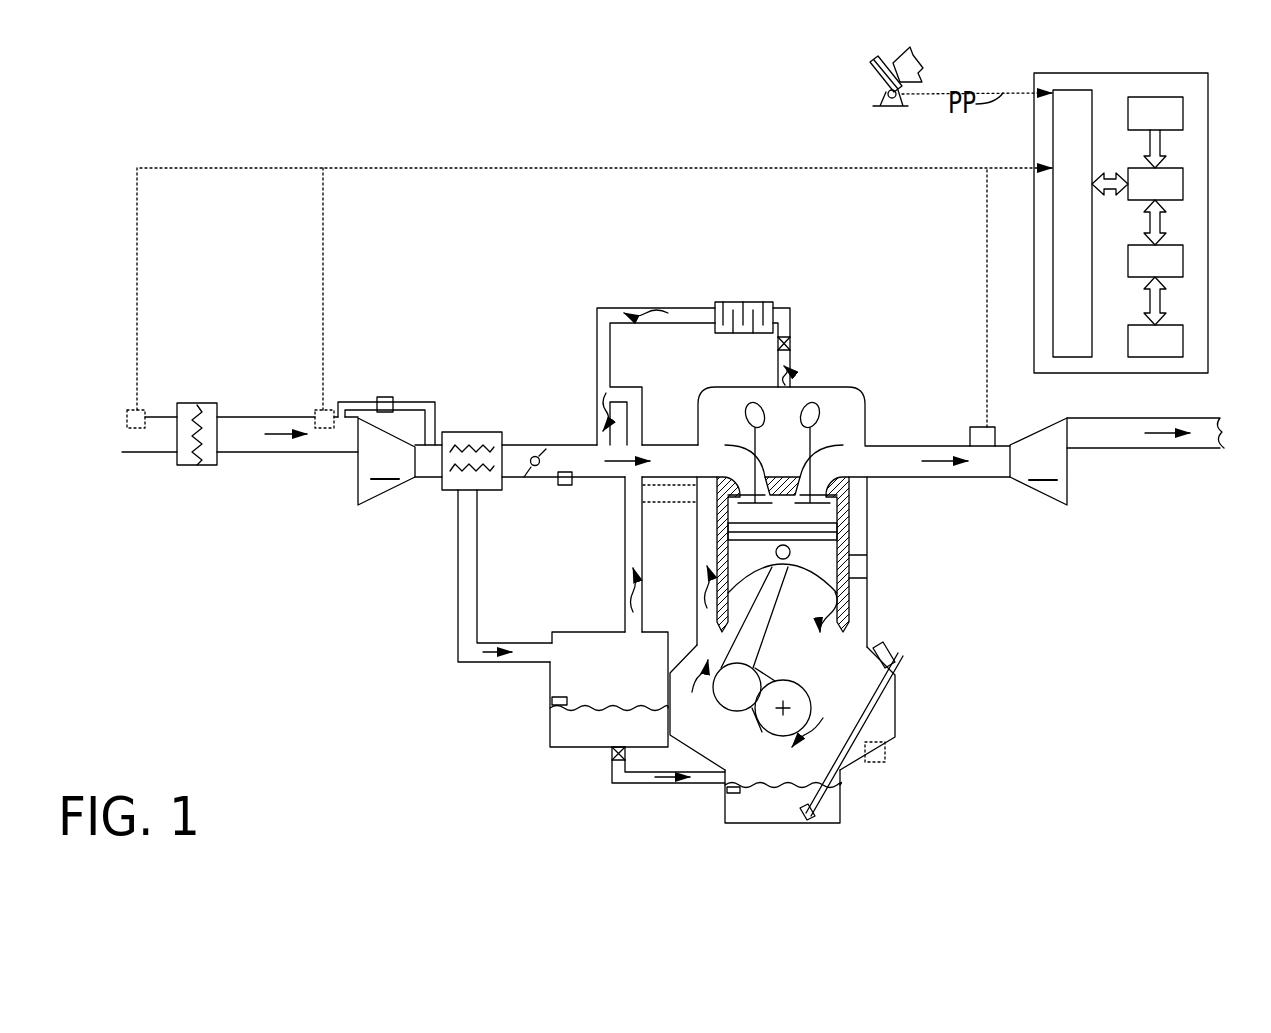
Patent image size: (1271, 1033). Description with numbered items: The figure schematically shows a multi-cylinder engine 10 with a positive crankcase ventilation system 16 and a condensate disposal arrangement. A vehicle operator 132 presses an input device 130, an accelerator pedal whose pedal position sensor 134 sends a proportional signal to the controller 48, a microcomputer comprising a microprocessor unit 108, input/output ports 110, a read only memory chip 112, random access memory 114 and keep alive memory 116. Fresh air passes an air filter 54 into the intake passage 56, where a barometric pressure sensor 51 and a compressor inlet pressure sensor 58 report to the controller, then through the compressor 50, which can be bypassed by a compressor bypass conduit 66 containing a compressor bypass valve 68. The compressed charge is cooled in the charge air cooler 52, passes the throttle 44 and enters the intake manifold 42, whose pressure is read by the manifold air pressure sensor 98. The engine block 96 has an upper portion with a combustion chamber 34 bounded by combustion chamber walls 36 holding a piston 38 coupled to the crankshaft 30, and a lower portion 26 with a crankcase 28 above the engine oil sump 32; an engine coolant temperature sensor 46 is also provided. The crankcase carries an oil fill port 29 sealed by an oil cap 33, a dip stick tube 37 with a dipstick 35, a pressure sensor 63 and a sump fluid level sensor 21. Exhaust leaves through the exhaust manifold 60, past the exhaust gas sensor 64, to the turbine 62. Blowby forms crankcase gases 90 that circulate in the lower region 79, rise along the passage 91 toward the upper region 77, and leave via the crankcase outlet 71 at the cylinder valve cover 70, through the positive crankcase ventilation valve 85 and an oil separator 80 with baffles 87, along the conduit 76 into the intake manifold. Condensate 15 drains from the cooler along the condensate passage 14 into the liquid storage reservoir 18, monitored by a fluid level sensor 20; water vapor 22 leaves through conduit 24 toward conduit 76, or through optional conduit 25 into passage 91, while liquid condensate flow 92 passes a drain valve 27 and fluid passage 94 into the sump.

The engine 10 is at (262, 118).
The condensate passage 14 is at (458, 580).
The condensate 15 is at (482, 664).
The positive crankcase ventilation system 16 is at (716, 274).
The liquid storage reservoir 18 is at (572, 632).
The fluid level sensor 20 is at (552, 700).
The fluid level sensor 21 is at (728, 794).
The water vapor 22 is at (633, 596).
The conduit 24 is at (625, 505).
The optional conduit 25 is at (668, 495).
The lower portion of the engine block 26 is at (899, 788).
The drain valve 27 is at (613, 753).
The crankcase 28 is at (886, 742).
The oil fill port 29 is at (870, 648).
The crankshaft 30 is at (738, 690).
The engine oil sump 32 is at (780, 800).
The oil cap 33 is at (882, 648).
The combustion chamber 34 is at (790, 517).
The dipstick 35 is at (902, 658).
The combustion chamber walls 36 is at (850, 530).
The dip stick tube 37 is at (870, 700).
The piston 38 is at (742, 570).
The intake manifold 42 is at (592, 441).
The throttle 44 is at (526, 485).
The engine coolant temperature sensor 46 is at (857, 570).
The controller 48 is at (1157, 73).
The compressor 50 is at (386, 461).
The barometric pressure sensor 51 is at (137, 410).
The charge air cooler 52 is at (490, 492).
The air filter 54 is at (178, 405).
The intake passage 56 is at (130, 437).
The compressor inlet pressure sensor 58 is at (325, 410).
The exhaust manifold 60 is at (922, 444).
The turbine 62 is at (1117, 461).
The pressure sensor 63 is at (877, 763).
The exhaust gas sensor 64 is at (996, 432).
The compressor bypass conduit 66 is at (434, 404).
The compressor bypass valve 68 is at (388, 397).
The cylinder valve cover 70 is at (764, 387).
The crankcase outlet 71 is at (793, 372).
The conduit 76 is at (660, 308).
The upper region of the crankcase 77 is at (712, 422).
The lower region of the crankcase 79 is at (755, 762).
The oil separator 80 is at (742, 302).
The positive crankcase ventilation valve 85 is at (792, 343).
The baffles 87 is at (757, 318).
The crankcase gases 90 is at (706, 605).
The passage 91 is at (712, 523).
The liquid condensate flow 92 is at (658, 784).
The fluid passage 94 is at (690, 786).
The engine block 96 is at (964, 597).
The manifold air pressure sensor 98 is at (565, 486).
The microprocessor unit 108 is at (1184, 186).
The input/output ports 110 is at (1075, 102).
The read only memory chip 112 is at (1184, 112).
The random access memory 114 is at (1184, 261).
The keep alive memory 116 is at (1184, 341).
The input device 130 is at (877, 75).
The vehicle operator 132 is at (916, 58).
The pedal position sensor 134 is at (887, 92).